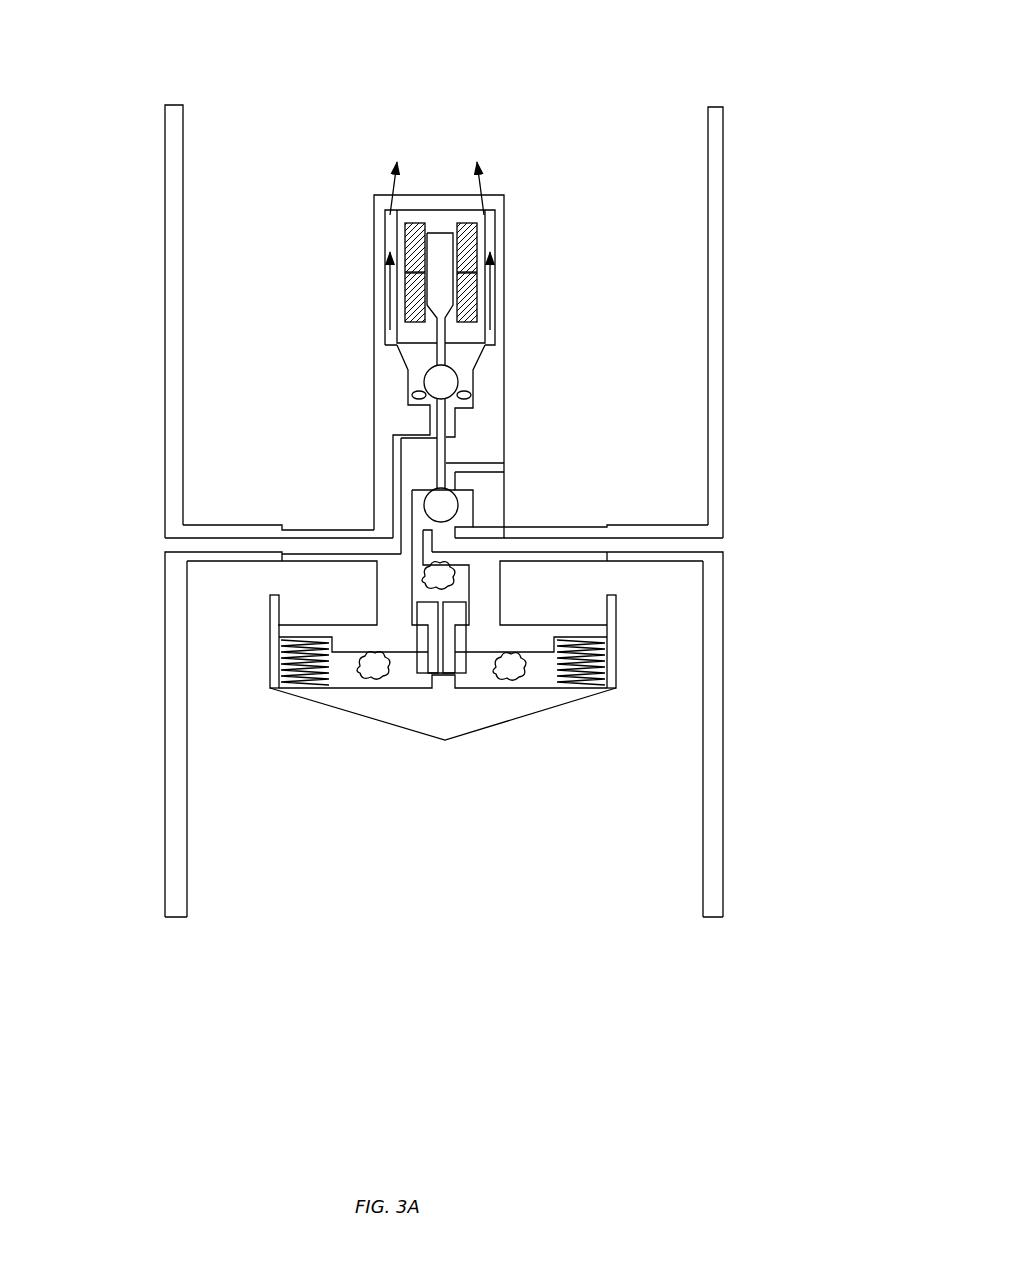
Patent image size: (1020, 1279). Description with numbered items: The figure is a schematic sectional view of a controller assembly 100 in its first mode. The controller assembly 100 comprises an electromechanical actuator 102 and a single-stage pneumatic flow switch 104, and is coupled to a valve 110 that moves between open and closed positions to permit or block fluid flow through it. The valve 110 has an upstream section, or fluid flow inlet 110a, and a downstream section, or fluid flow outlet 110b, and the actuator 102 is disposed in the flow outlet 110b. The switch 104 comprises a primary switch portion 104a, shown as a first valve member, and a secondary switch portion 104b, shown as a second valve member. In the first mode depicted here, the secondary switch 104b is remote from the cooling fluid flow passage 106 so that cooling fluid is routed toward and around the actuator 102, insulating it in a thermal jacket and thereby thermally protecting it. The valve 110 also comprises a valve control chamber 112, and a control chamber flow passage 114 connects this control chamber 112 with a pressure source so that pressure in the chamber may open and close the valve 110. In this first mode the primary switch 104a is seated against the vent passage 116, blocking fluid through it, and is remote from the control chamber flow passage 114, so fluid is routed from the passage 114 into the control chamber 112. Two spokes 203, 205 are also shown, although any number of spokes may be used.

The controller assembly 100 is at (762, 108).
The electromechanical actuator 102 is at (514, 219).
The single-stage pneumatic flow switch 104 is at (446, 452).
The primary switch portion 104a is at (447, 503).
The secondary switch portion 104b is at (460, 377).
The cooling fluid flow passage 106 is at (185, 541).
The valve 110 is at (503, 742).
The fluid flow inlet 110a is at (389, 840).
The fluid flow outlet 110b is at (378, 59).
The valve control chamber 112 is at (463, 582).
The control chamber flow passage 114 is at (690, 543).
The vent passage 116 is at (483, 467).
The spoke 203 is at (208, 525).
The spoke 205 is at (657, 527).